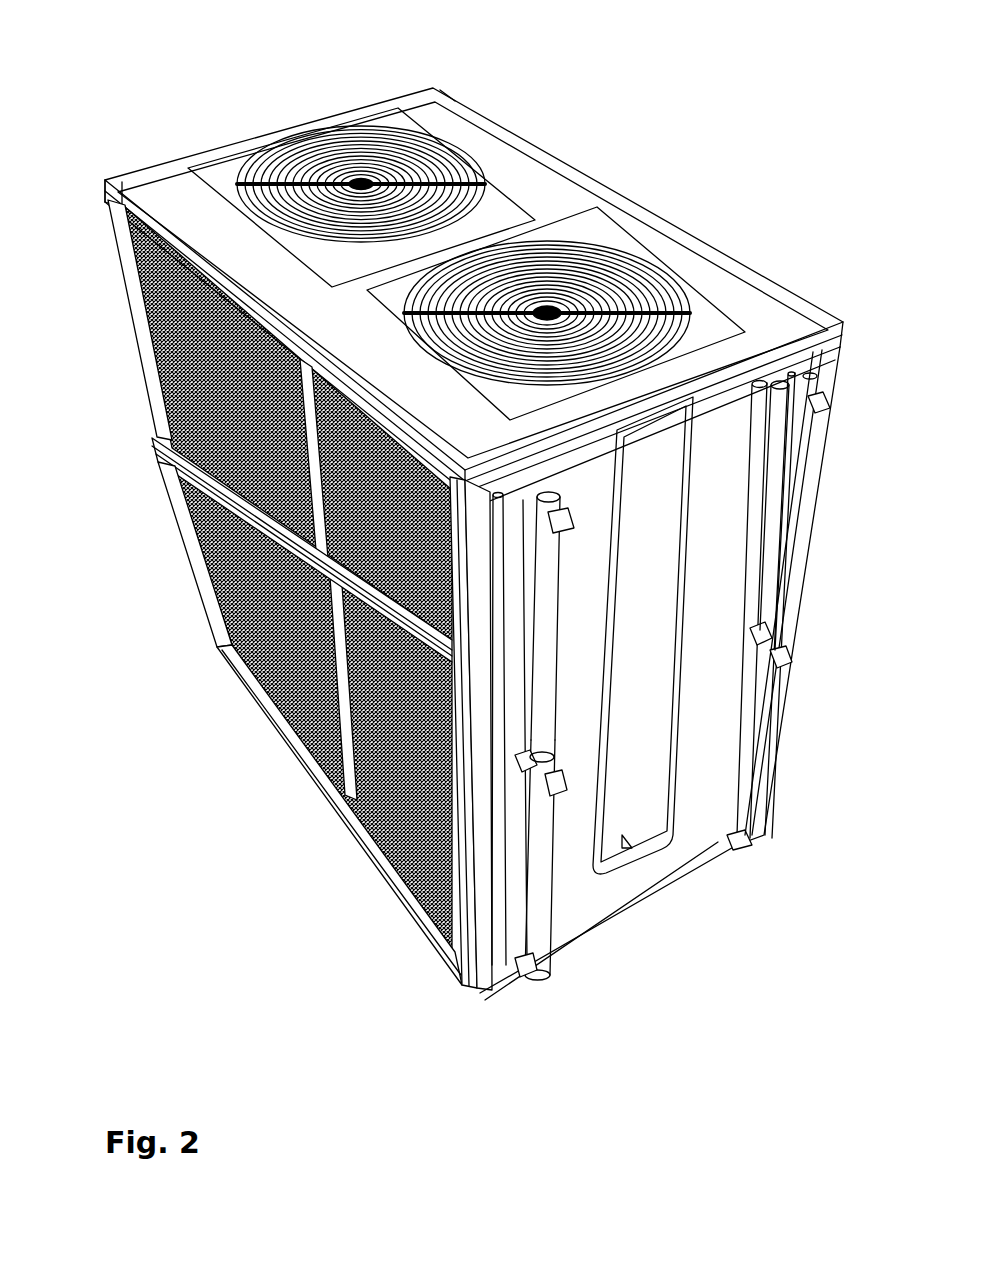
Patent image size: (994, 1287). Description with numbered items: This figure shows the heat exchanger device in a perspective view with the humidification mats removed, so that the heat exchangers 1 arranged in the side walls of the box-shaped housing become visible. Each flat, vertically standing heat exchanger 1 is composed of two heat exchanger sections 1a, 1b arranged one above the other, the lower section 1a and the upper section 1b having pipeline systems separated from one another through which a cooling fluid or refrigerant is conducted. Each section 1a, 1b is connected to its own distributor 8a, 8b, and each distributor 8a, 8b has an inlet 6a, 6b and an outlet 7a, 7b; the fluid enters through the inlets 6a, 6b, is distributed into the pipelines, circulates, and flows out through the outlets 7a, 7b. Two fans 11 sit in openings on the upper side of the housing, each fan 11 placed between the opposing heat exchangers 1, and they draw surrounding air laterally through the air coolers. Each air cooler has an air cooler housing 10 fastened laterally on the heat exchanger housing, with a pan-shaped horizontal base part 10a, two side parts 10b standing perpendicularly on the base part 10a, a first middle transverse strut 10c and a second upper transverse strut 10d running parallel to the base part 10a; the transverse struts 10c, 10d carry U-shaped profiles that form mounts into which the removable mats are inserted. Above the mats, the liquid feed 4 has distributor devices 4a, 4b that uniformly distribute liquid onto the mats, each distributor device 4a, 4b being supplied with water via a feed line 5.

The heat exchanger 1 is at (266, 582).
The lower heat exchanger section 1a is at (215, 600).
The upper heat exchanger section 1b is at (178, 362).
The liquid feed 4 is at (162, 212).
The distributor device 4a is at (165, 480).
The distributor device 4b is at (118, 220).
The feed line 5 is at (643, 635).
The inlet 6a is at (556, 790).
The inlet 6b is at (572, 523).
The outlet 7a is at (525, 975).
The outlet 7b is at (523, 760).
The distributor 8a is at (535, 907).
The distributor 8b is at (543, 627).
The air cooler housing 10 is at (467, 907).
The base part 10a is at (385, 847).
The side part 10b is at (165, 403).
The first middle transverse strut 10c is at (227, 647).
The second upper transverse strut 10d is at (133, 215).
The fan 11 is at (616, 240).